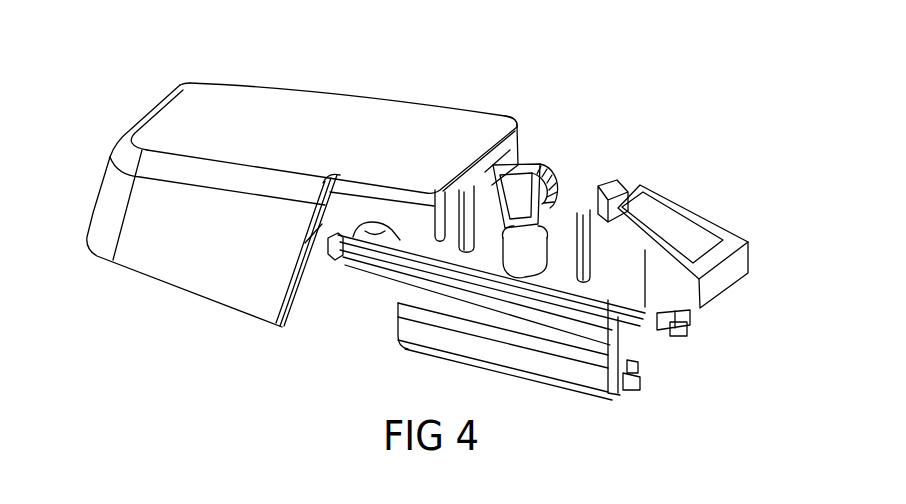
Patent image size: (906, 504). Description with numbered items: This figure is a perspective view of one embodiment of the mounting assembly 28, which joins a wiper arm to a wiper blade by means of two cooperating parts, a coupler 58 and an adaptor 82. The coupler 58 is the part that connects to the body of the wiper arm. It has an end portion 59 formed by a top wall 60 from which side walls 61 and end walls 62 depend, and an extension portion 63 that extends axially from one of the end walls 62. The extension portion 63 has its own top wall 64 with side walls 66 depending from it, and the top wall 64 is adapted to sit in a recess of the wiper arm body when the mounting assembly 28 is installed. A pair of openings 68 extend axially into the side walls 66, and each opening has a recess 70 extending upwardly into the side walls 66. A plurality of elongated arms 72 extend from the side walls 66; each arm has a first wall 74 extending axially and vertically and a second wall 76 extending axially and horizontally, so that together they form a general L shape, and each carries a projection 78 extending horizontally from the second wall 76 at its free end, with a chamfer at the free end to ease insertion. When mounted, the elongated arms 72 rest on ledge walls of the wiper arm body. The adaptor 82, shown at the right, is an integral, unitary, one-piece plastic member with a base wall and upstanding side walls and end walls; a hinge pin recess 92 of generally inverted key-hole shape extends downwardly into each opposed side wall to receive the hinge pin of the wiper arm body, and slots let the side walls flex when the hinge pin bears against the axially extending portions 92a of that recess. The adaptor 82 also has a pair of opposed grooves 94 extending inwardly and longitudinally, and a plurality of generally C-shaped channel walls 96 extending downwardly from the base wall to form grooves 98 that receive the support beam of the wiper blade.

The mounting assembly 28 is at (557, 112).
The coupler 58 is at (359, 88).
The end portion 59 is at (182, 86).
The top wall 60 is at (330, 137).
The side walls 61 is at (212, 273).
The end walls 62 is at (126, 131).
The extension portion 63 is at (462, 112).
The top wall 64 is at (519, 134).
The side walls 66 is at (520, 160).
The openings 68 is at (342, 260).
The recess 70 is at (360, 220).
The elongated arms 72 is at (388, 296).
The first wall 74 is at (519, 333).
The second wall 76 is at (450, 285).
The projection 78 is at (566, 352).
The adaptor 82 is at (699, 210).
The hinge pin recess 92 is at (530, 283).
The hook 92a is at (544, 176).
The grooves 94 is at (607, 398).
The channel walls 96 is at (700, 318).
The grooves 98 is at (686, 334).